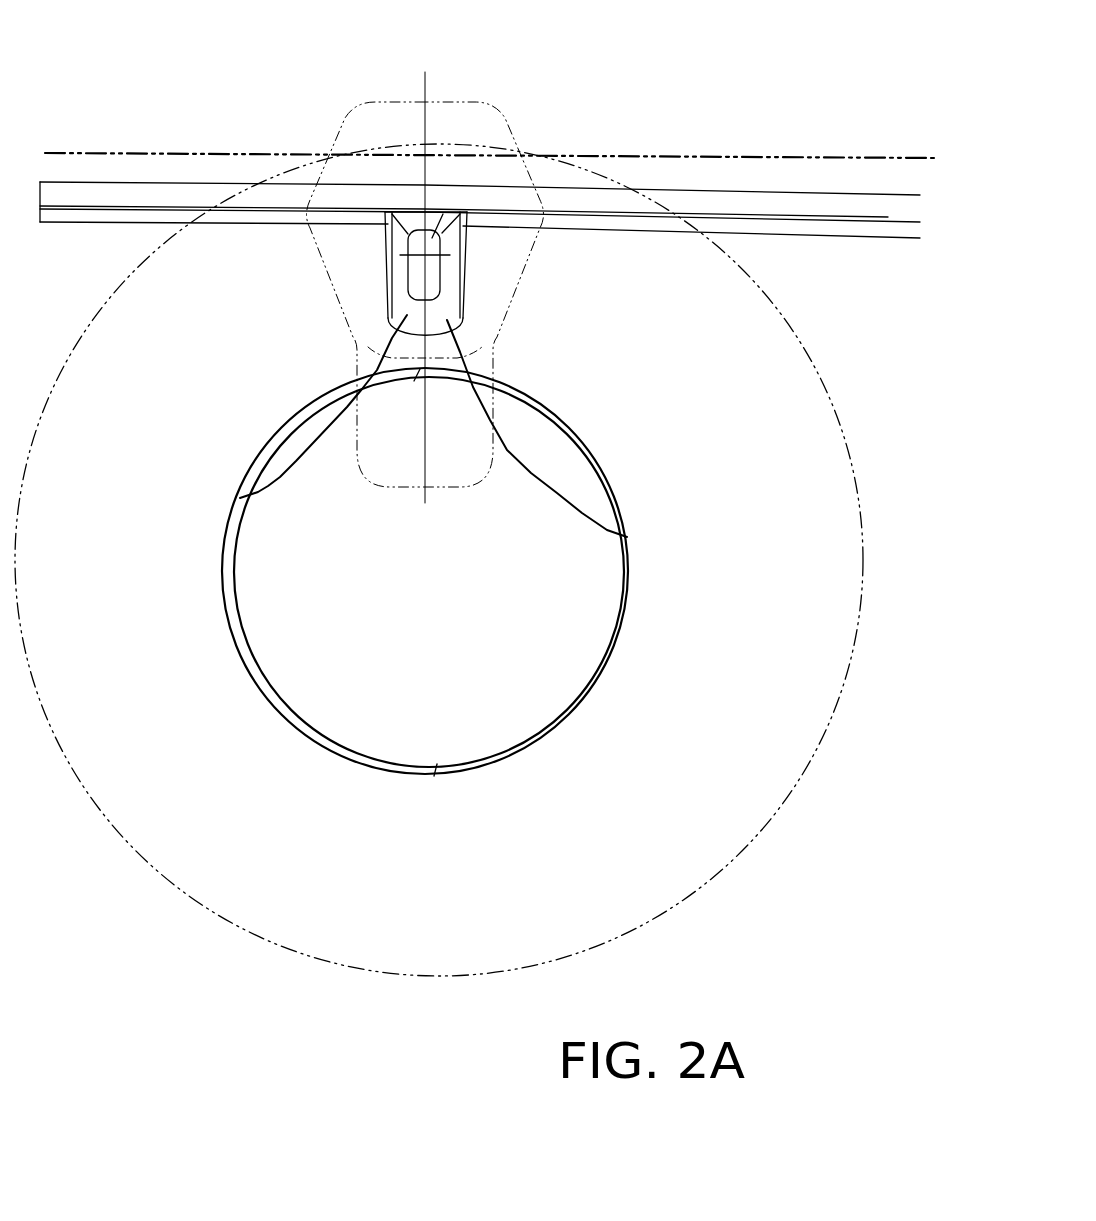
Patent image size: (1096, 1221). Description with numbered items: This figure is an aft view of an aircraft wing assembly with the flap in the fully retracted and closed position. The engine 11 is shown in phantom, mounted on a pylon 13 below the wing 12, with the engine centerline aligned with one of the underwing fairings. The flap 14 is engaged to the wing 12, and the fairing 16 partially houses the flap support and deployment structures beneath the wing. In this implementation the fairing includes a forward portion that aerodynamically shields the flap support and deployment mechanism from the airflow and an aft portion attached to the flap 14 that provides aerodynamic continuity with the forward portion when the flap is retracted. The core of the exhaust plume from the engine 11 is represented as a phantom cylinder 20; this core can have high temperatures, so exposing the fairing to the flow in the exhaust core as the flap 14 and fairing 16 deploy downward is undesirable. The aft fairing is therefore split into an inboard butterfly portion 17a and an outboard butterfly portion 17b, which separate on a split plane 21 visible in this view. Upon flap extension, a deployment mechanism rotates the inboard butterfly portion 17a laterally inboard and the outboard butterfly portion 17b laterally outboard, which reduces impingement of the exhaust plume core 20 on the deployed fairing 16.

The engine 11 is at (237, 922).
The wing 12 is at (160, 153).
The pylon 13 is at (514, 287).
The flap 14 is at (727, 203).
The fairing 16 is at (373, 315).
The inboard butterfly portion 17a is at (266, 418).
The outboard butterfly portion 17b is at (588, 436).
The phantom cylinder 20 is at (500, 762).
The split plane 21 is at (427, 76).